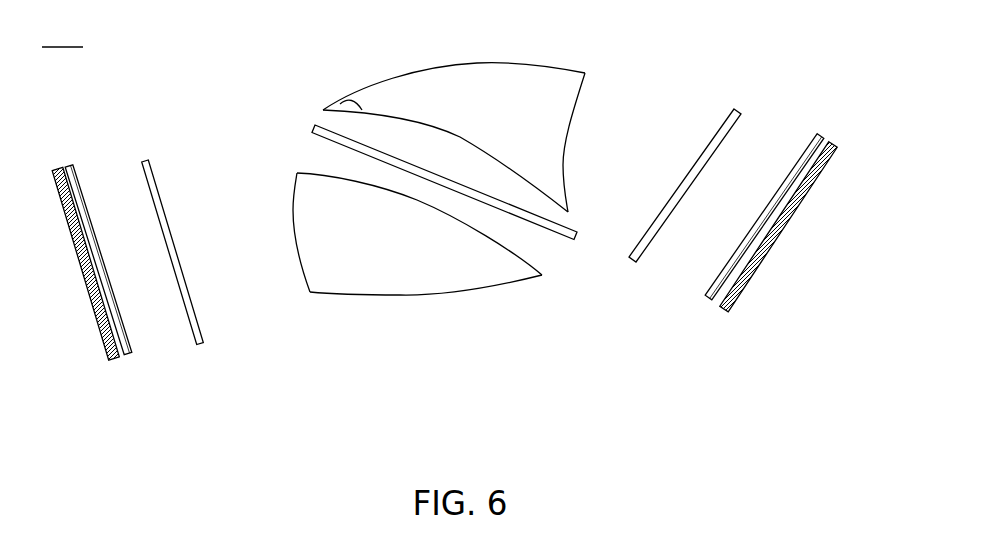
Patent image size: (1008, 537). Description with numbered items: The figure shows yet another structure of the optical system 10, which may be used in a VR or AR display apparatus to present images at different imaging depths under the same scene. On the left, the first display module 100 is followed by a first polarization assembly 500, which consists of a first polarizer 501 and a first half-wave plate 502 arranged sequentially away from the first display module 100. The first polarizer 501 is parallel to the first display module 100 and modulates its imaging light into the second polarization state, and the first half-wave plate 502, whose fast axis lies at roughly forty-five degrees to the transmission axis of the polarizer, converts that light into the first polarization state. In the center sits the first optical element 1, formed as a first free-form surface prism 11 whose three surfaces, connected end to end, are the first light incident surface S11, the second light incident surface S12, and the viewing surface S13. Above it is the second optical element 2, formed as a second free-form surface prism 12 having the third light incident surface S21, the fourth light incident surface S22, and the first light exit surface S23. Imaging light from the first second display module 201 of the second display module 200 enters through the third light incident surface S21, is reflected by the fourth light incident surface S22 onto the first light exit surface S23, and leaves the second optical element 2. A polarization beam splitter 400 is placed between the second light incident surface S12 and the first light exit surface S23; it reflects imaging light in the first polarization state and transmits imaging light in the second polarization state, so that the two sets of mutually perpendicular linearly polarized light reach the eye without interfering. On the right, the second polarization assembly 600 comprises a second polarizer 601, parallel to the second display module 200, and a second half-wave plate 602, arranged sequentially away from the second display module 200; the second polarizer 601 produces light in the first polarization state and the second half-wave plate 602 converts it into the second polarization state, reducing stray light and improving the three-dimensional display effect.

The optical system 10 is at (62, 34).
The first display module 100 is at (83, 282).
The first polarization assembly 500 is at (134, 231).
The first polarizer 501 is at (78, 198).
The first half-wave plate 502 is at (166, 239).
The polarization beam splitter 400 is at (313, 128).
The second optical element 2 is at (455, 114).
The second free-form surface prism 12 is at (455, 127).
The third light incident surface S21 is at (565, 143).
The fourth light incident surface S22 is at (523, 68).
The first light exit surface S23 is at (343, 101).
The first optical element 1 is at (406, 248).
The first free-form surface prism 11 is at (414, 248).
The first light incident surface S11 is at (292, 195).
The second light incident surface S12 is at (532, 265).
The viewing surface S13 is at (502, 285).
The second polarization assembly 600 is at (733, 186).
The second polarizer 601 is at (752, 102).
The second half-wave plate 602 is at (732, 123).
The second display module 200 is at (809, 227).
The first second display module 201 is at (818, 173).